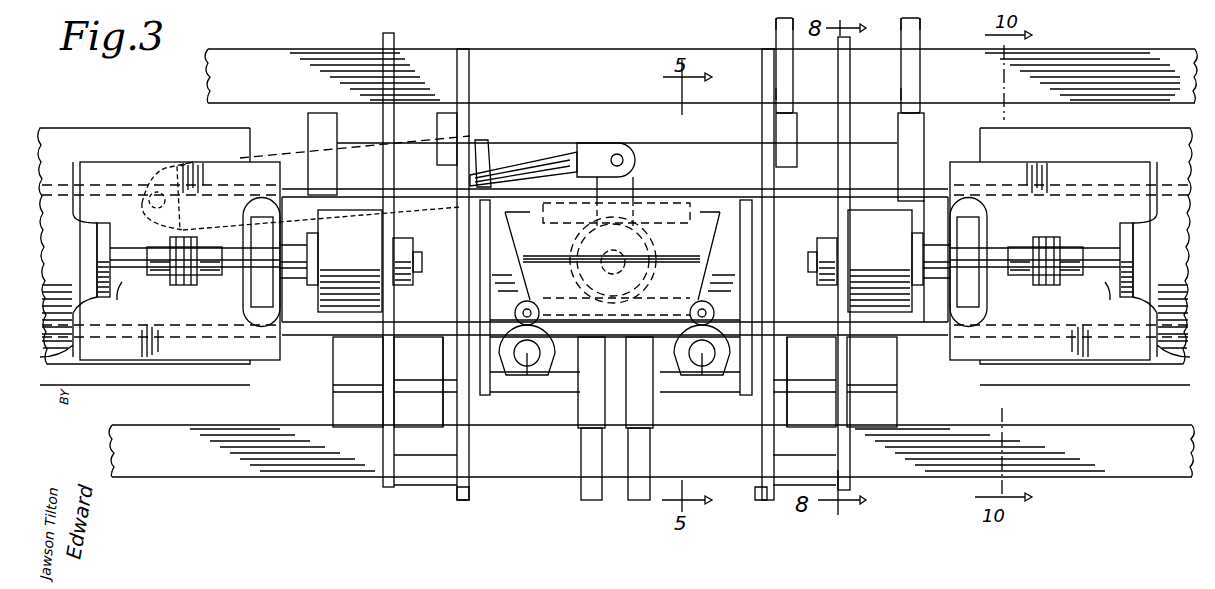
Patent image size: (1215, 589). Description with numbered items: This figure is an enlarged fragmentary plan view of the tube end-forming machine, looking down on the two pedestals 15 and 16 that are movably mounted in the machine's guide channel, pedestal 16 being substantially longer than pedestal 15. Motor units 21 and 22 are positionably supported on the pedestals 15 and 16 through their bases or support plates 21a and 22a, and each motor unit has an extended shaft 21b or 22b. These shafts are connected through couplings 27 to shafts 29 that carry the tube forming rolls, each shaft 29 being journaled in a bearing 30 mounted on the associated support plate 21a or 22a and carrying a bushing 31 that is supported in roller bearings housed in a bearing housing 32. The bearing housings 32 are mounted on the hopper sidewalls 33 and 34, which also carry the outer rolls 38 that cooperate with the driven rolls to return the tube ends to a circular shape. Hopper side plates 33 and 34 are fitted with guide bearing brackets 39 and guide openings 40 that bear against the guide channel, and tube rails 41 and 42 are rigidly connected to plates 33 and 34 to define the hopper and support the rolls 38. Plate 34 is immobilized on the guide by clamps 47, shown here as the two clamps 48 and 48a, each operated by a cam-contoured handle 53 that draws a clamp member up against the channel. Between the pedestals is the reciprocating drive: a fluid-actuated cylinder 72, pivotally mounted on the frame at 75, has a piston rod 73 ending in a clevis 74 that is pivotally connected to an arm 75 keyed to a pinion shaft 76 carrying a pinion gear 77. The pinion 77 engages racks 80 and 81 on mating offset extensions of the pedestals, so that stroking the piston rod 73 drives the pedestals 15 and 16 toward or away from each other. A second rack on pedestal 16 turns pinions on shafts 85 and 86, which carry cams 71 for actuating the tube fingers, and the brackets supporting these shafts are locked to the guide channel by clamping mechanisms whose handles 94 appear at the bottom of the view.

The pedestal 15 is at (330, 321).
The pedestal 16 is at (928, 212).
The motor unit 21 is at (56, 177).
The motor unit support plate 21a is at (192, 380).
The extended shaft 21b is at (134, 296).
The motor unit 22 is at (1179, 177).
The motor unit support plate 22a is at (1063, 380).
The extended shaft 22b is at (1087, 296).
The coupling 27 is at (1058, 230).
The shaft 29 is at (1004, 296).
The bearing 30 is at (268, 297).
The bushing 31 is at (938, 270).
The bearing housing 32 is at (855, 292).
The hopper sidewall 33 is at (383, 478).
The hopper sidewall 34 is at (850, 478).
The outer roll 38 is at (829, 240).
The guide bearing bracket 39 is at (348, 142).
The guide opening 40 is at (888, 404).
The tube rail 41 is at (469, 79).
The tube rail 42 is at (762, 75).
The clamp 47 is at (918, 96).
The clamp 48 is at (793, 69).
The clamp 48a is at (920, 63).
The handle 53 is at (901, 28).
The cam 71 is at (714, 399).
The fluid-actuated cylinder 72 is at (290, 159).
The piston rod 73 is at (520, 165).
The clevis 74 is at (590, 148).
The arm 75 is at (636, 174).
The pinion shaft 76 is at (585, 280).
The pinion gear 77 is at (573, 265).
The rack 80 is at (668, 226).
The rack 81 is at (658, 295).
The shaft 85 is at (527, 355).
The shaft 86 is at (702, 355).
The handle 94 is at (767, 517).